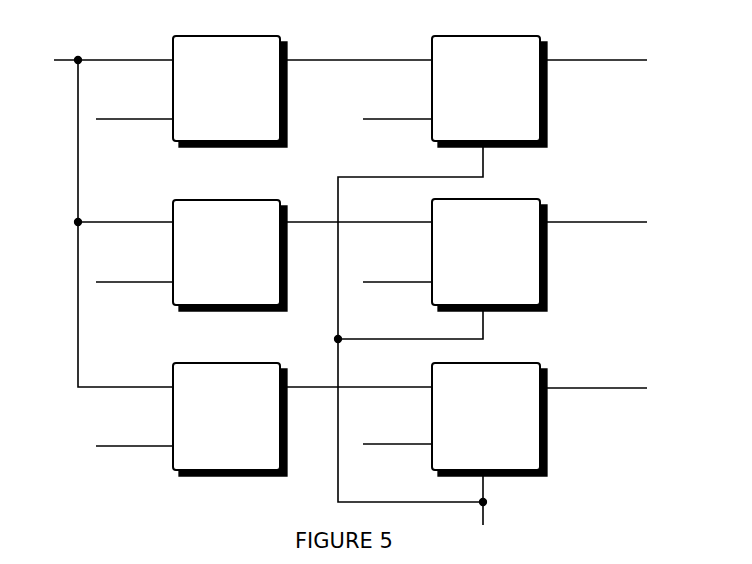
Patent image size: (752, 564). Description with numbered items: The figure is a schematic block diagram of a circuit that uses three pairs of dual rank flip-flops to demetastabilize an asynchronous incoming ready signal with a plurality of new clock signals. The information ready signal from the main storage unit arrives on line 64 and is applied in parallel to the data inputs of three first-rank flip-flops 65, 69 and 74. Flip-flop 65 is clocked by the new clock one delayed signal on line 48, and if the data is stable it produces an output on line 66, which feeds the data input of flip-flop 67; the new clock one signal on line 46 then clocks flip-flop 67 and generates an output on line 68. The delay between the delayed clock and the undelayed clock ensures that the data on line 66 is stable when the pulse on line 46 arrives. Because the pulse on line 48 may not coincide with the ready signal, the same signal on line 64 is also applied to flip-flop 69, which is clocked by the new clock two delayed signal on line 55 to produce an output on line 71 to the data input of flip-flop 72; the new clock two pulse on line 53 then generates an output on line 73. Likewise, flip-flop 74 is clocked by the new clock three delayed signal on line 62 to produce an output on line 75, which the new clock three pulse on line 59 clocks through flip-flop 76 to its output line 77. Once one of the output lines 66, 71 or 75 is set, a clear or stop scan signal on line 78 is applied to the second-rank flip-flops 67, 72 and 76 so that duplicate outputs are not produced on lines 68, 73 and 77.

The new clock one signal line 46 is at (379, 121).
The new clock one delayed signal line 48 is at (118, 121).
The new clock two signal line 53 is at (387, 285).
The new clock two delayed signal line 55 is at (128, 285).
The new clock three signal line 59 is at (382, 447).
The new clock three delayed signal line 62 is at (118, 449).
The ready signal line 64 is at (77, 57).
The flip-flop 65 is at (230, 91).
The output line of flip-flop 65 66 is at (298, 57).
The flip-flop 67 is at (489, 91).
The output line of flip-flop 67 68 is at (553, 57).
The flip-flop 69 is at (230, 255).
The output line of flip-flop 69 71 is at (302, 220).
The flip-flop 72 is at (489, 255).
The output line of flip-flop 72 73 is at (553, 220).
The flip-flop 74 is at (230, 419).
The output line of flip-flop 74 75 is at (300, 385).
The flip-flop 76 is at (489, 419).
The output line of flip-flop 76 77 is at (553, 386).
The clear or stop scan signal line 78 is at (487, 511).